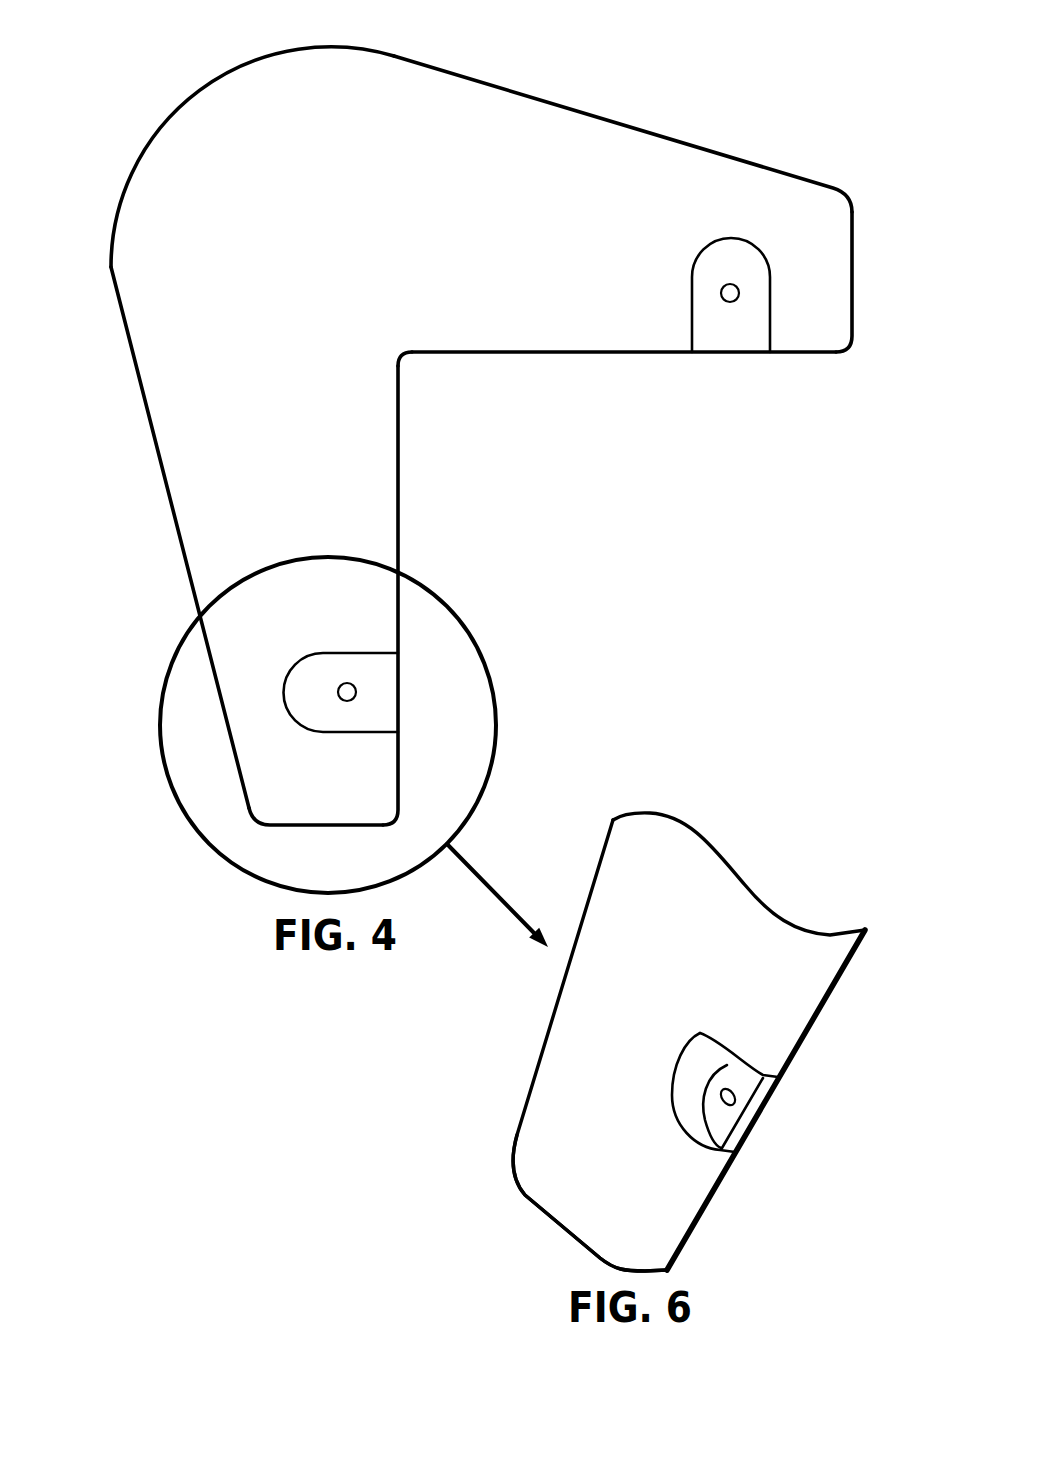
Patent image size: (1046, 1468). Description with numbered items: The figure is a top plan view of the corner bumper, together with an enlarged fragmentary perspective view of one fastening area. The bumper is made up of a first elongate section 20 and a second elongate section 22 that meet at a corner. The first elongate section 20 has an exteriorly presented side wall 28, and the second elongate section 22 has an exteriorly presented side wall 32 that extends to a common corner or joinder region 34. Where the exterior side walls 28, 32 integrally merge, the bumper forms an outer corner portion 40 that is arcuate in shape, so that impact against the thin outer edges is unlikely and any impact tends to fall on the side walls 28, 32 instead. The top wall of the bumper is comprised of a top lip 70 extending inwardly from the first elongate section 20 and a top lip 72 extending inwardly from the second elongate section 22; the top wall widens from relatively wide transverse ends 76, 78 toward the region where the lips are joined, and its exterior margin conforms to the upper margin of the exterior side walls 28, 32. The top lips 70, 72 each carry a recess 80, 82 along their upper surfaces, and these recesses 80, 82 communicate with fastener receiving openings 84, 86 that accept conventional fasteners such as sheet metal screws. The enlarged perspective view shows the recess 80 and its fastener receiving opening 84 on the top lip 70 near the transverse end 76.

In FIG. 4, the first elongate section 20 is at (120, 412).
In FIG. 4, the second elongate section 22 is at (762, 108).
In FIG. 4, the exteriorly presented side wall 28 is at (160, 463).
In FIG. 4, the exteriorly presented side wall 32 is at (545, 100).
In FIG. 4, the common corner or joinder region 34 is at (402, 357).
In FIG. 4, the outer corner portion 40 is at (219, 77).
In FIG. 4, the top lip 70 is at (410, 526).
In FIG. 6, the top lip 70 is at (795, 1106).
In FIG. 4, the top lip 72 is at (571, 362).
In FIG. 4, the transverse end 76 is at (312, 827).
In FIG. 6, the transverse end 76 is at (553, 1220).
In FIG. 4, the transverse end 78 is at (855, 268).
In FIG. 4, the recess 80 is at (310, 688).
In FIG. 6, the recess 80 is at (688, 1090).
In FIG. 4, the recess 82 is at (740, 260).
In FIG. 4, the fastener receiving opening 84 is at (347, 682).
In FIG. 6, the fastener receiving opening 84 is at (731, 1090).
In FIG. 4, the fastener receiving opening 86 is at (723, 290).